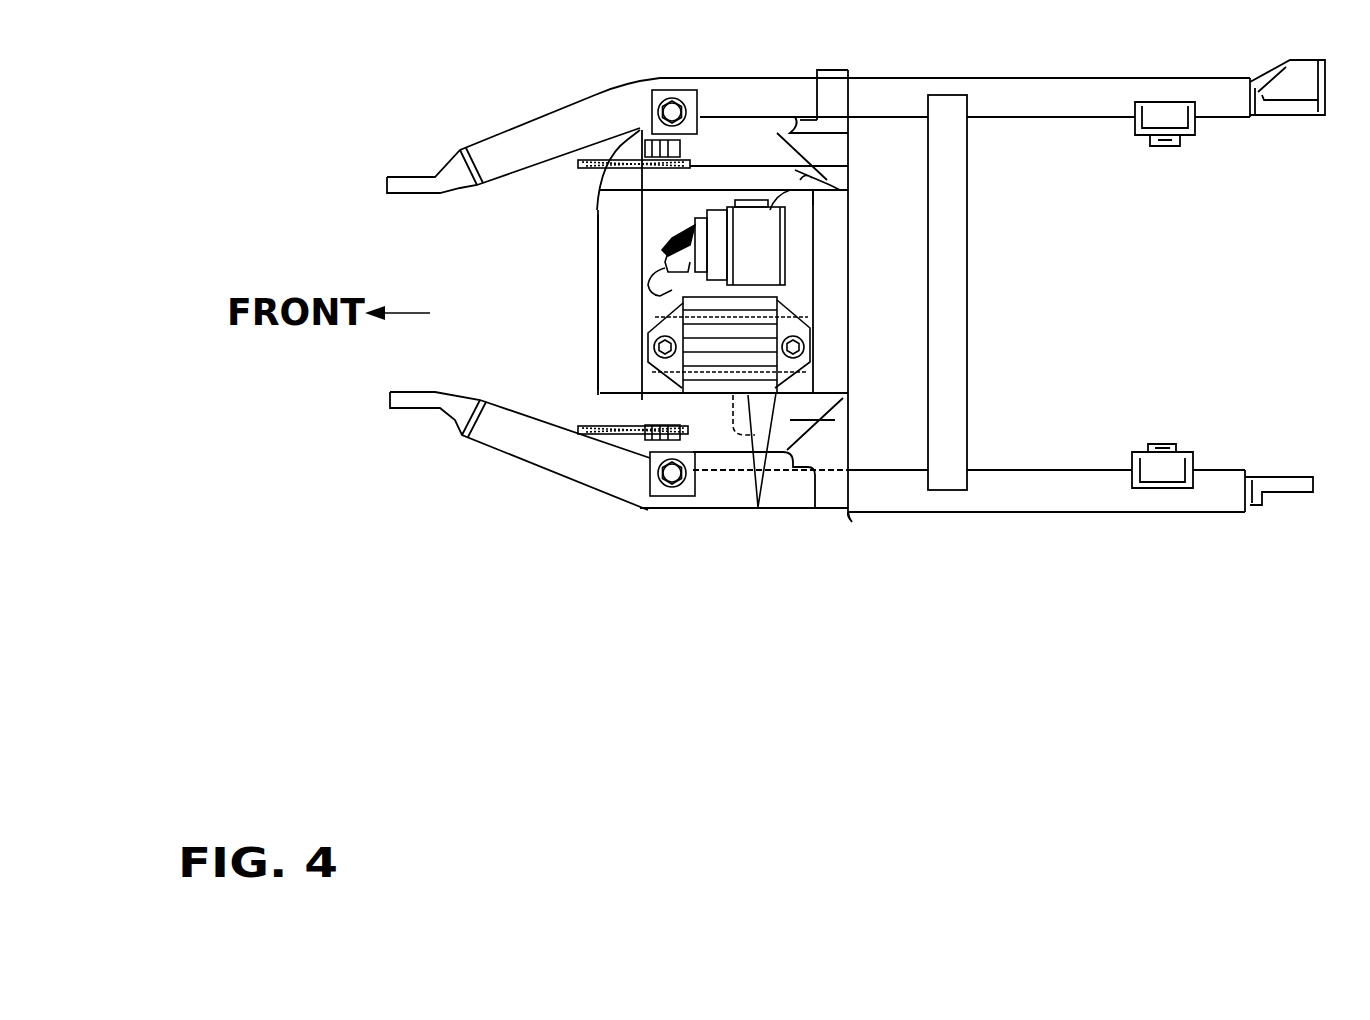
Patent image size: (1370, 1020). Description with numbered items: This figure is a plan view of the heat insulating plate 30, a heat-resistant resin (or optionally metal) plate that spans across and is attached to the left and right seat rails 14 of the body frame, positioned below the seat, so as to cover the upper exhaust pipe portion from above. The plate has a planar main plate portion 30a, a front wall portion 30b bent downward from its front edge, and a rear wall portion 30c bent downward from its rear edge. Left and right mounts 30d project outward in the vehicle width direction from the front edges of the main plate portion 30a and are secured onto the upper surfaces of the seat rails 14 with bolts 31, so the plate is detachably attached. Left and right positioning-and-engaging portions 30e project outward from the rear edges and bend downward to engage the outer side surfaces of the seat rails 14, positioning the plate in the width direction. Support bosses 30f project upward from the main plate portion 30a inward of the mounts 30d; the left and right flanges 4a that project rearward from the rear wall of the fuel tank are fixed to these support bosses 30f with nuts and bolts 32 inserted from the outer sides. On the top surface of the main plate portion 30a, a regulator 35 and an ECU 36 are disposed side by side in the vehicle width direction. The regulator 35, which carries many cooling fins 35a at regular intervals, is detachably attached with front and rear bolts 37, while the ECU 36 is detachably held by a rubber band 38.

The flange 4a is at (580, 117).
The seat rail 14 is at (1067, 76).
The heat insulating plate 30 is at (858, 130).
The main plate portion 30a is at (795, 232).
The front wall portion 30b is at (606, 272).
The rear wall portion 30c is at (838, 296).
The mount 30d is at (708, 95).
The positioning-and-engaging portion 30e is at (838, 70).
The support boss 30f is at (702, 117).
The bolt 31 is at (672, 108).
The bolt 32 is at (655, 140).
The regulator 35 is at (806, 376).
The cooling fin 35a is at (757, 507).
The ECU 36 is at (797, 255).
The bolt 37 is at (797, 338).
The rubber band 38 is at (830, 182).